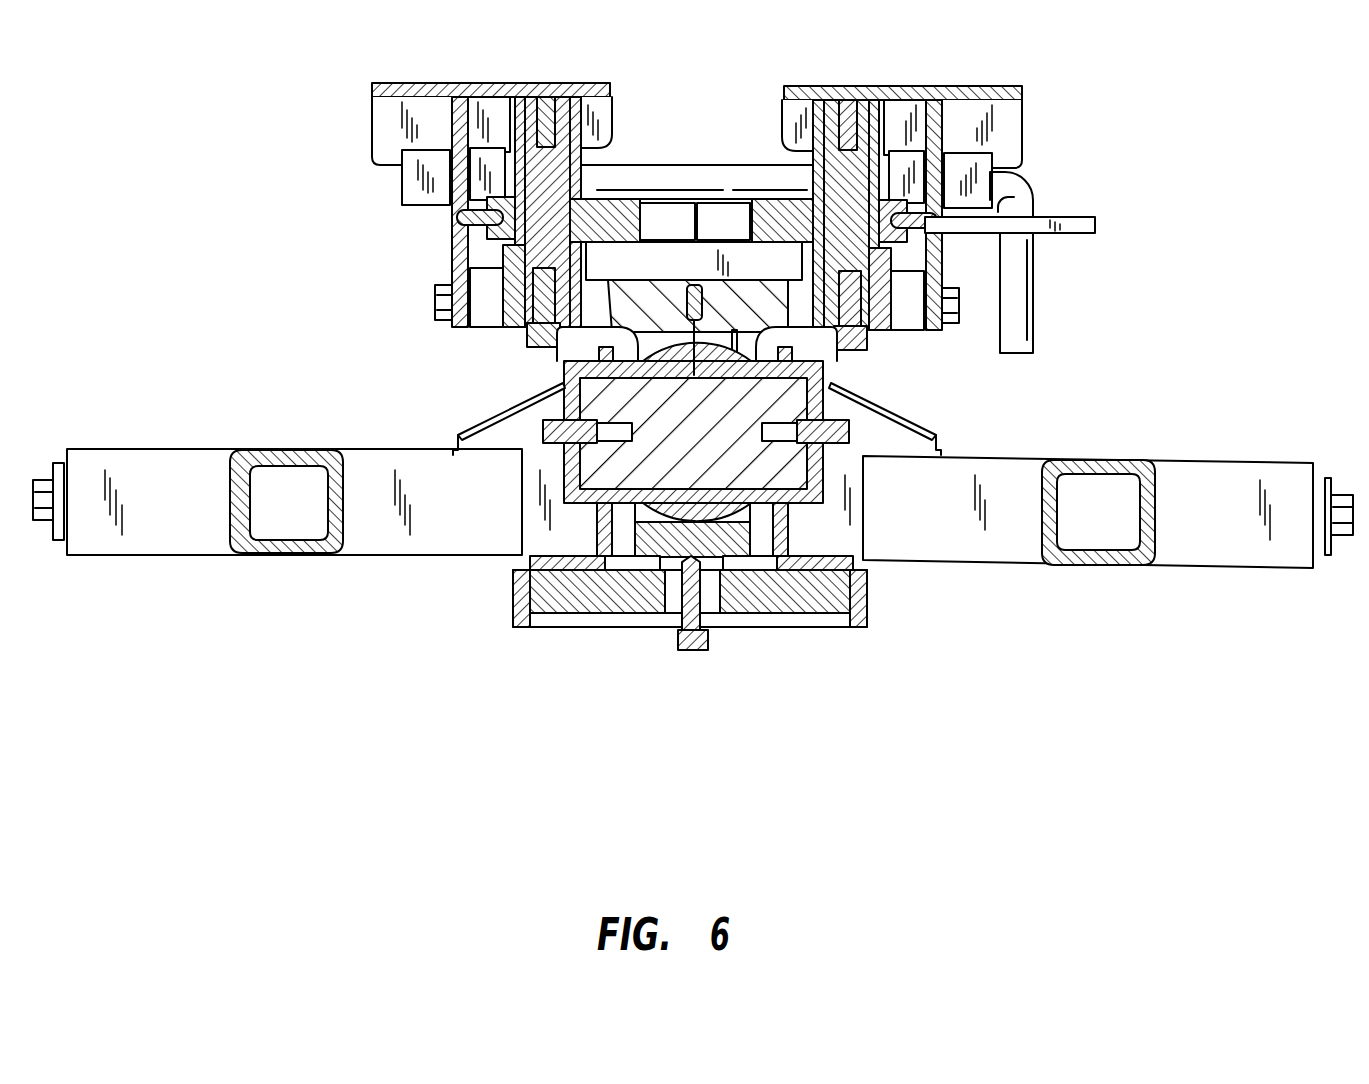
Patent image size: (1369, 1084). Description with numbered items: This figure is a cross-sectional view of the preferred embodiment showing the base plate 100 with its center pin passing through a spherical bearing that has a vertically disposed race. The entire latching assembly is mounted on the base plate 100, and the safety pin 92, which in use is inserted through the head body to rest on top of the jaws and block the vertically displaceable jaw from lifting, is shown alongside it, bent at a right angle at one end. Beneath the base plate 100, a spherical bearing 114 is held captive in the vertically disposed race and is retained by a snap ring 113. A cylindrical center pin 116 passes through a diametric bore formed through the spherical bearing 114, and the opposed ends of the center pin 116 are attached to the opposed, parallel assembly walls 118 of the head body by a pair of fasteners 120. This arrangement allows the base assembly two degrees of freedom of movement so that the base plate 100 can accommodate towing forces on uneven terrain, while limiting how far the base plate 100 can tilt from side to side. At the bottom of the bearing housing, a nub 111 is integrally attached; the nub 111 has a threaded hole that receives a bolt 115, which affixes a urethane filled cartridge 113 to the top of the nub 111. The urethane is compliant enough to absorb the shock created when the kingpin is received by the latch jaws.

The safety pin 92 is at (688, 182).
The base plate 100 is at (480, 300).
The nub 111 is at (726, 622).
The snap ring 113 is at (620, 627).
The spherical bearing 114 is at (697, 353).
The bolt 115 is at (692, 657).
The cylindrical center pin 116 is at (590, 505).
The assembly walls 118 is at (590, 378).
The fasteners 120 is at (540, 433).